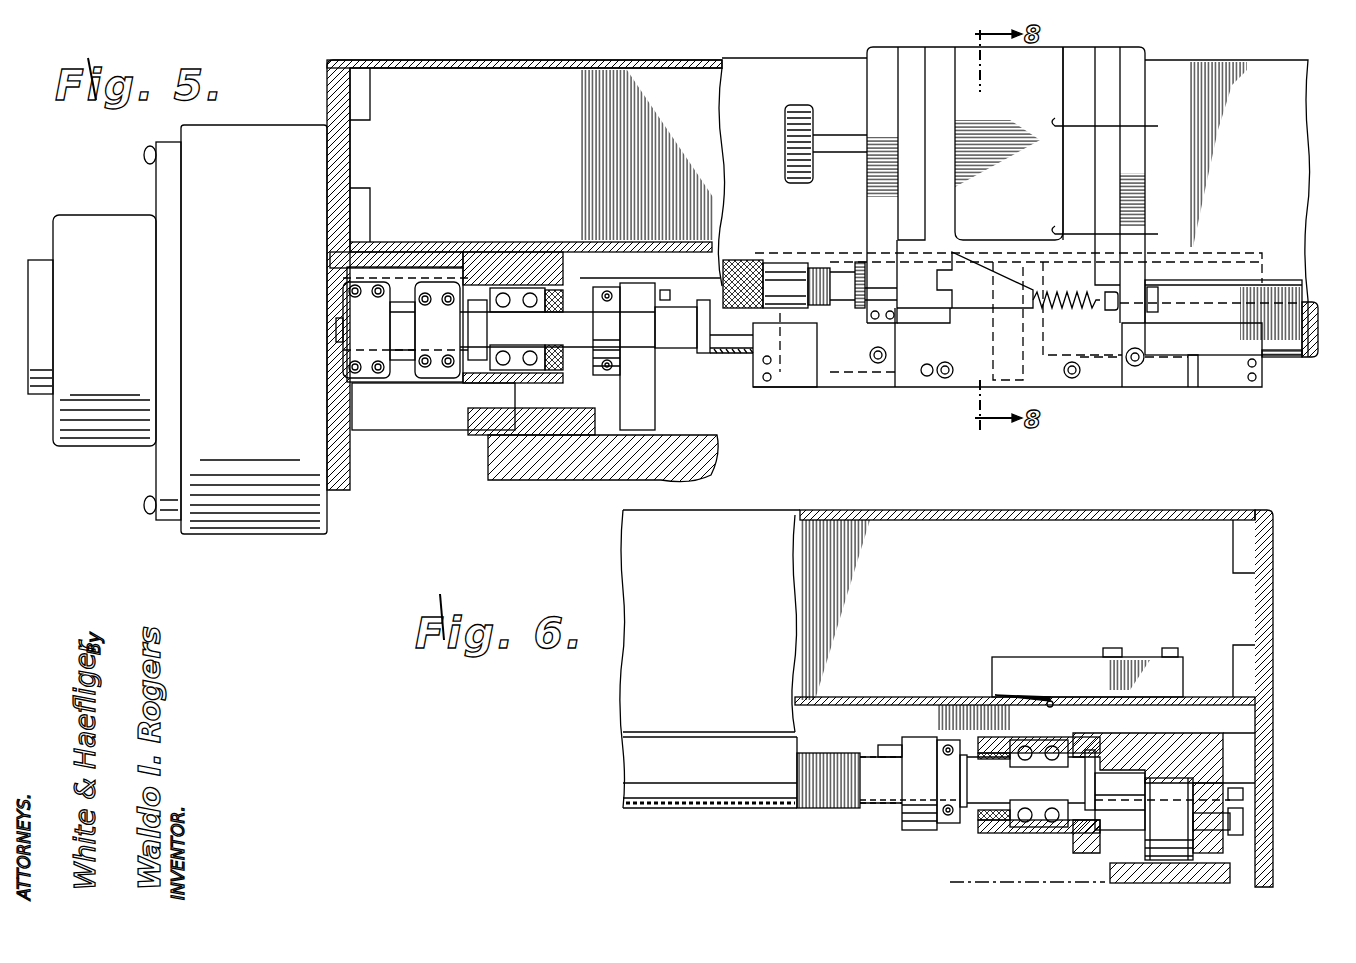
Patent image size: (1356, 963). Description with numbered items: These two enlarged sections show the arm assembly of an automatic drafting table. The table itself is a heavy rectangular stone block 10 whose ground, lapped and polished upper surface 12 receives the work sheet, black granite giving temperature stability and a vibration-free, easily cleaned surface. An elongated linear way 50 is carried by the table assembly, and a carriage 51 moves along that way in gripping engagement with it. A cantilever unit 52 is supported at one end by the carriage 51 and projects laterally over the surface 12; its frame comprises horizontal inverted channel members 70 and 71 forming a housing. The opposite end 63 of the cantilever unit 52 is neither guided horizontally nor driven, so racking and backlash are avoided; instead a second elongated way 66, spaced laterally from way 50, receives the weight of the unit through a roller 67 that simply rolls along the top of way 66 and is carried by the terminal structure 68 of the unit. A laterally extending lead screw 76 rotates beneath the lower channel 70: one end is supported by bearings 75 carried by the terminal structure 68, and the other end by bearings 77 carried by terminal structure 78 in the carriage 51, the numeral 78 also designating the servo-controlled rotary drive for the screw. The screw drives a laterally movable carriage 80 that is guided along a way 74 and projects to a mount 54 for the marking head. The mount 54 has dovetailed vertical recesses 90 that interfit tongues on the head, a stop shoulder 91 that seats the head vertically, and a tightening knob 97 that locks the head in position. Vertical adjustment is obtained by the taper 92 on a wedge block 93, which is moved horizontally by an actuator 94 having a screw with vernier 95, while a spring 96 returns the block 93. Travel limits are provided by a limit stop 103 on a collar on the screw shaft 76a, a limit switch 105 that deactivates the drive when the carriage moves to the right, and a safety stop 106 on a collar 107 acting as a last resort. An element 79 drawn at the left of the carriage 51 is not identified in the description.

In FIG. 5, the stone block 10 is at (534, 484).
In FIG. 6, the upper surface 12 is at (1016, 880).
In FIG. 5, the elongated linear way 50 is at (580, 405).
In FIG. 5, the carriage 51 is at (386, 432).
In FIG. 5, the cantilever unit 52 is at (688, 57).
In FIG. 6, the cantilever unit 52 is at (843, 508).
In FIG. 5, the mount 54 is at (1030, 172).
In FIG. 6, the end of cantilever unit 63 is at (1275, 686).
In FIG. 6, the second elongated way 66 is at (1110, 869).
In FIG. 6, the roller 67 is at (1195, 846).
In FIG. 6, the terminal structure 68 is at (1205, 755).
In FIG. 5, the inverted channel member 70 is at (426, 242).
In FIG. 6, the inverted channel member 70 is at (820, 697).
In FIG. 5, the inverted channel member 71 is at (462, 60).
In FIG. 6, the inverted channel member 71 is at (1125, 512).
In FIG. 5, the way 74 is at (747, 342).
In FIG. 6, the bearings 75 is at (1033, 828).
In FIG. 5, the lead screw 76 is at (707, 356).
In FIG. 6, the lead screw 76 is at (813, 803).
In FIG. 5, the screw shaft 76a is at (663, 338).
In FIG. 6, the screw shaft 76a is at (878, 790).
In FIG. 5, the bearings 77 is at (355, 337).
In FIG. 5, the terminal structure 78 is at (530, 376).
In FIG. 5, the motor 79 is at (130, 458).
In FIG. 5, the laterally movable carriage 80 is at (944, 392).
In FIG. 5, the dovetailed vertical recesses 90 is at (1120, 116).
In FIG. 5, the stop shoulder 91 is at (1120, 221).
In FIG. 5, the taper 92 is at (1010, 275).
In FIG. 5, the wedge block 93 is at (994, 280).
In FIG. 5, the actuator 94 is at (776, 268).
In FIG. 5, the vernier 95 is at (815, 262).
In FIG. 5, the spring 96 is at (1045, 310).
In FIG. 5, the tightening knob 97 is at (788, 128).
In FIG. 5, the limit stop 103 is at (664, 290).
In FIG. 6, the limit switch 105 is at (1048, 706).
In FIG. 6, the safety stop 106 is at (886, 746).
In FIG. 6, the collar 107 is at (921, 750).